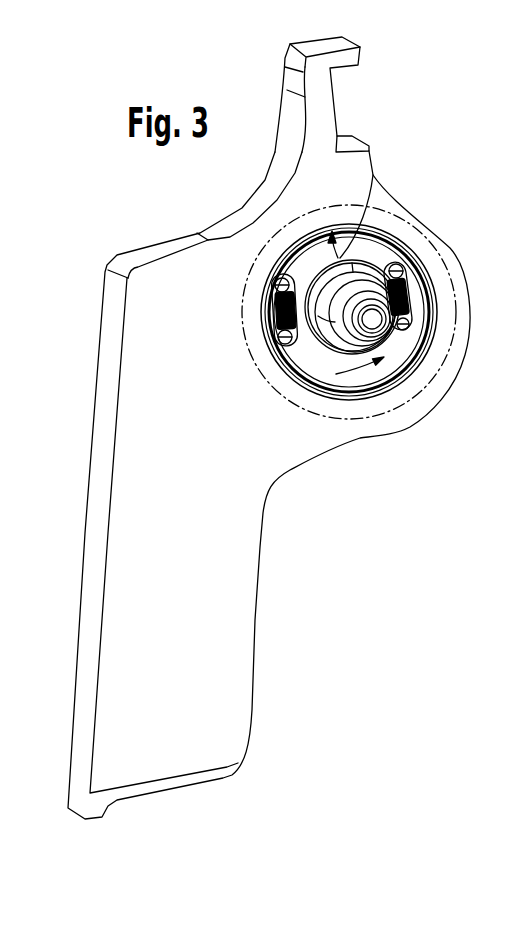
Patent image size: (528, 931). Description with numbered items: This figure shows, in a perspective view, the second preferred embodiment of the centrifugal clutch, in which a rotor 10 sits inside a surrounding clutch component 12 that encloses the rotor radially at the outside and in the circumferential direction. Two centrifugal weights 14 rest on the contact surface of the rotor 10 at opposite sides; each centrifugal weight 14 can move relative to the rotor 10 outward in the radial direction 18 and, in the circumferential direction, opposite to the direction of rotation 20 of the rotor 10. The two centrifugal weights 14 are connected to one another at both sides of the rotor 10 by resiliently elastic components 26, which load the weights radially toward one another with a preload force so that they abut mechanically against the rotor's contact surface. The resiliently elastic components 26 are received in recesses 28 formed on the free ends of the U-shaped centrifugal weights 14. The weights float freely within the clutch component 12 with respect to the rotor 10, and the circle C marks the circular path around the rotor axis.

The rotor 10 is at (378, 336).
The clutch component 12 is at (240, 598).
The centrifugal weight 14 is at (375, 251).
The radial direction 18 is at (375, 176).
The direction of rotation 20 is at (357, 373).
The resiliently elastic component 26 is at (270, 300).
The recess 28 is at (288, 345).
The pitch circle C is at (453, 318).